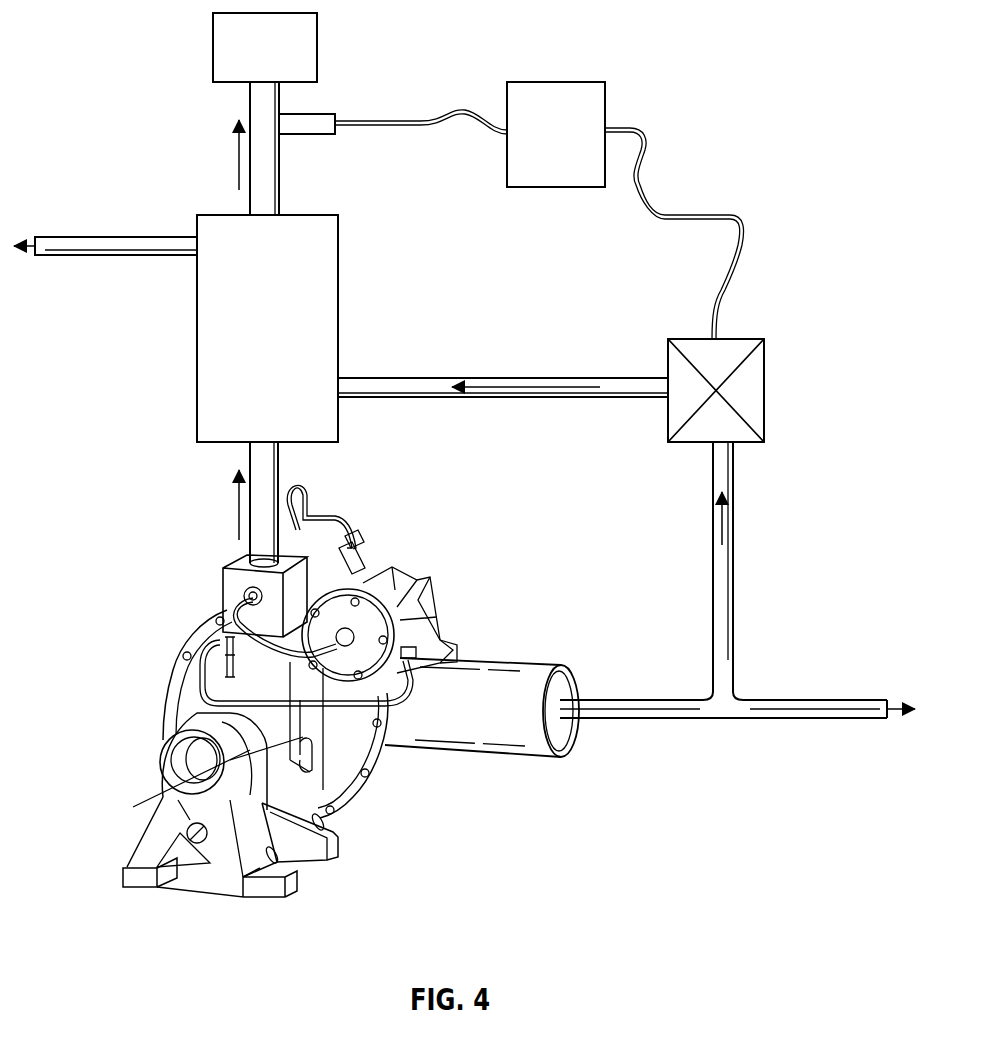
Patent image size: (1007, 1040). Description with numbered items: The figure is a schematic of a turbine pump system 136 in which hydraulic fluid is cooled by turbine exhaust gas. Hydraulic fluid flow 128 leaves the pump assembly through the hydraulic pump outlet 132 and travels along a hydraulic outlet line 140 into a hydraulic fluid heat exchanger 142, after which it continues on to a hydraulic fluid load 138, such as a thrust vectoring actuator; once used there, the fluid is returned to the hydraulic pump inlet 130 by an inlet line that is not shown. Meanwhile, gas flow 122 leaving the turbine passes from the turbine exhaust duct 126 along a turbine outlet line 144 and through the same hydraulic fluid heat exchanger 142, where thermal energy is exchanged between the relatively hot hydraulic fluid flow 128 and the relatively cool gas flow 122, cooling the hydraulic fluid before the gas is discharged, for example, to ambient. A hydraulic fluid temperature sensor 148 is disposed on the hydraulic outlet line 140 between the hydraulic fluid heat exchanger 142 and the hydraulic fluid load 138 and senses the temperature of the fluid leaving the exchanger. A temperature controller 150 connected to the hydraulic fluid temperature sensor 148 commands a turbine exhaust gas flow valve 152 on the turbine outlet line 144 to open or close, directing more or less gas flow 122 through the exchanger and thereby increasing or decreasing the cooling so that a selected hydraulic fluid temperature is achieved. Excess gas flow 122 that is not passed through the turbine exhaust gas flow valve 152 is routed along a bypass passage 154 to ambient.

The gas flow 122 is at (100, 240).
The turbine exhaust duct 126 is at (524, 762).
The hydraulic fluid flow 128 is at (212, 845).
The hydraulic pump inlet 130 is at (182, 760).
The hydraulic pump outlet 132 is at (246, 562).
The turbine pump system 136 is at (176, 908).
The hydraulic fluid load 138 is at (213, 46).
The hydraulic outlet line 140 is at (252, 500).
The hydraulic fluid heat exchanger 142 is at (213, 387).
The turbine outlet line 144 is at (722, 477).
The hydraulic fluid temperature sensor 148 is at (322, 100).
The temperature controller 150 is at (556, 82).
The turbine exhaust gas flow valve 152 is at (768, 415).
The bypass passage 154 is at (832, 710).